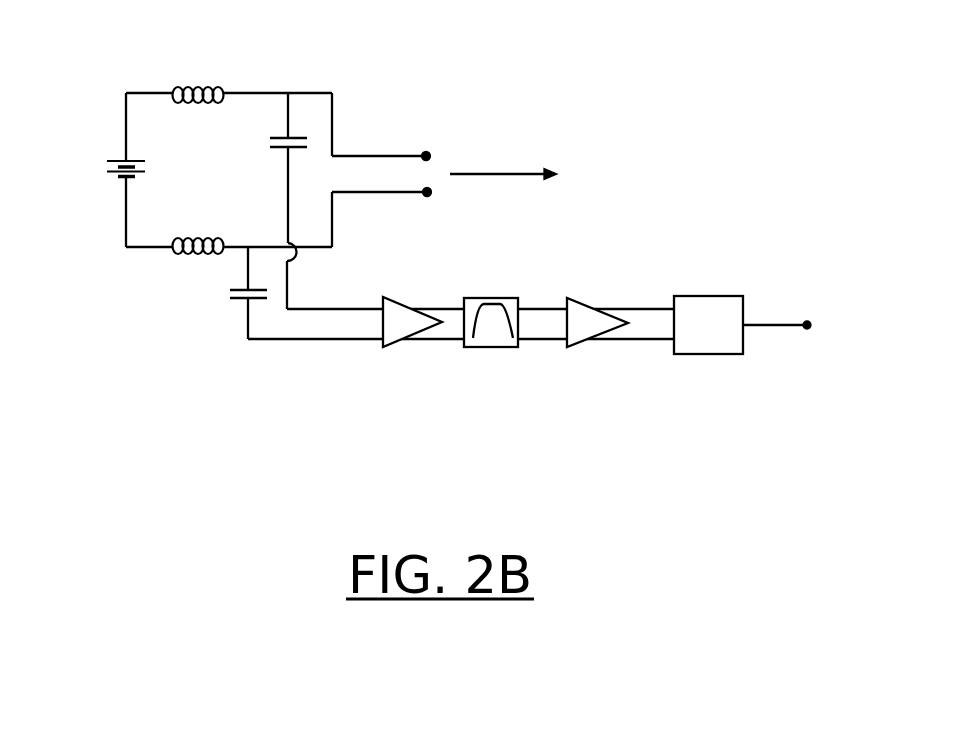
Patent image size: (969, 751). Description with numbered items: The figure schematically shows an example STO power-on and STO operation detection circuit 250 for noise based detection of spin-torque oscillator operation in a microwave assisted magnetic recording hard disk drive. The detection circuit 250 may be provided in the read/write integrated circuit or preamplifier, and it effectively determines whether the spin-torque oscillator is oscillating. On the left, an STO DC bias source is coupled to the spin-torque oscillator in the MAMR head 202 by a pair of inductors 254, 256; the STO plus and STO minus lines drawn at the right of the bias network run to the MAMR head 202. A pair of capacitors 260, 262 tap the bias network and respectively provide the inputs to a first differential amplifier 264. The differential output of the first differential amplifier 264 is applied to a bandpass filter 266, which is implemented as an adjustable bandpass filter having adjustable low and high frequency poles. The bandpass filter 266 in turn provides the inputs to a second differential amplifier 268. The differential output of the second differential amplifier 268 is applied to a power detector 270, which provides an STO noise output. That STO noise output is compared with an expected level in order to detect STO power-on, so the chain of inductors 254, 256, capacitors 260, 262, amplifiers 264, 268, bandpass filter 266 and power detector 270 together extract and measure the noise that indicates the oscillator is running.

The STO power-on and STO operation detection circuit 250 is at (444, 31).
The MAMR head 202 is at (749, 186).
The inductor 254 is at (198, 82).
The inductor 256 is at (198, 233).
The capacitor 260 is at (269, 201).
The capacitor 262 is at (231, 293).
The first differential amplifier 264 is at (402, 346).
The bandpass filter 266 is at (508, 296).
The second differential amplifier 268 is at (595, 347).
The power detector 270 is at (729, 333).